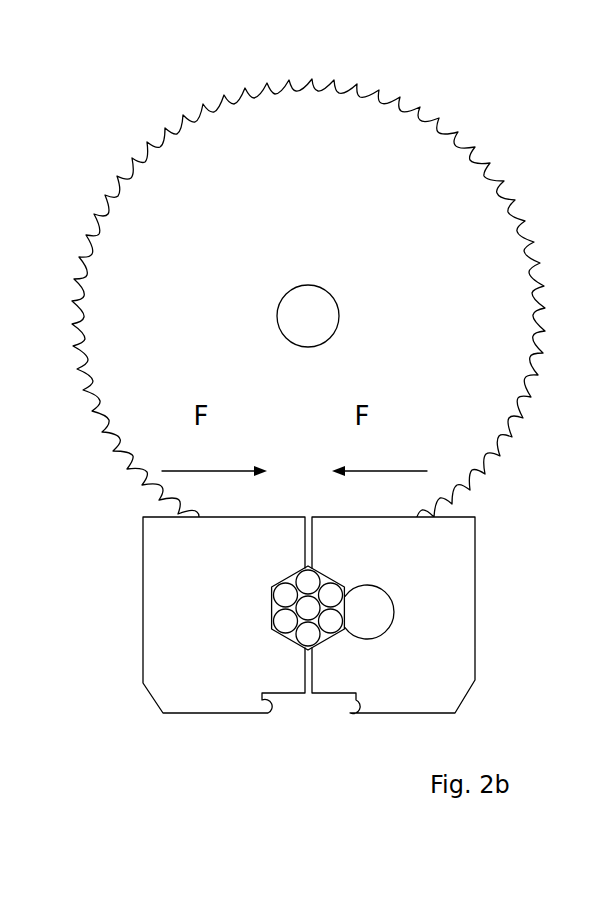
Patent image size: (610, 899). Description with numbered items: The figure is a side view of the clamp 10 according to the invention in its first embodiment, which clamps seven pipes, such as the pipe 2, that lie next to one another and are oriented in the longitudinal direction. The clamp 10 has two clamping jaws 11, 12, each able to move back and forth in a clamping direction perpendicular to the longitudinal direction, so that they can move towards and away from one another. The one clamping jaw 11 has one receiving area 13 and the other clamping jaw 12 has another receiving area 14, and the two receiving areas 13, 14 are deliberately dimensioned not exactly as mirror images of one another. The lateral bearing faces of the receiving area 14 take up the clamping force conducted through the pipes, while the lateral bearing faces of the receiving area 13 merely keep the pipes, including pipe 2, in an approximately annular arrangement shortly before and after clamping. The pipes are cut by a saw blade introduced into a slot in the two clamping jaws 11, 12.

The pipe 2 is at (407, 187).
The clamp 10 is at (321, 641).
The clamping jaw 11 is at (443, 590).
The clamping jaw 12 is at (180, 590).
The receiving area 13 is at (344, 623).
The receiving area 14 is at (270, 615).